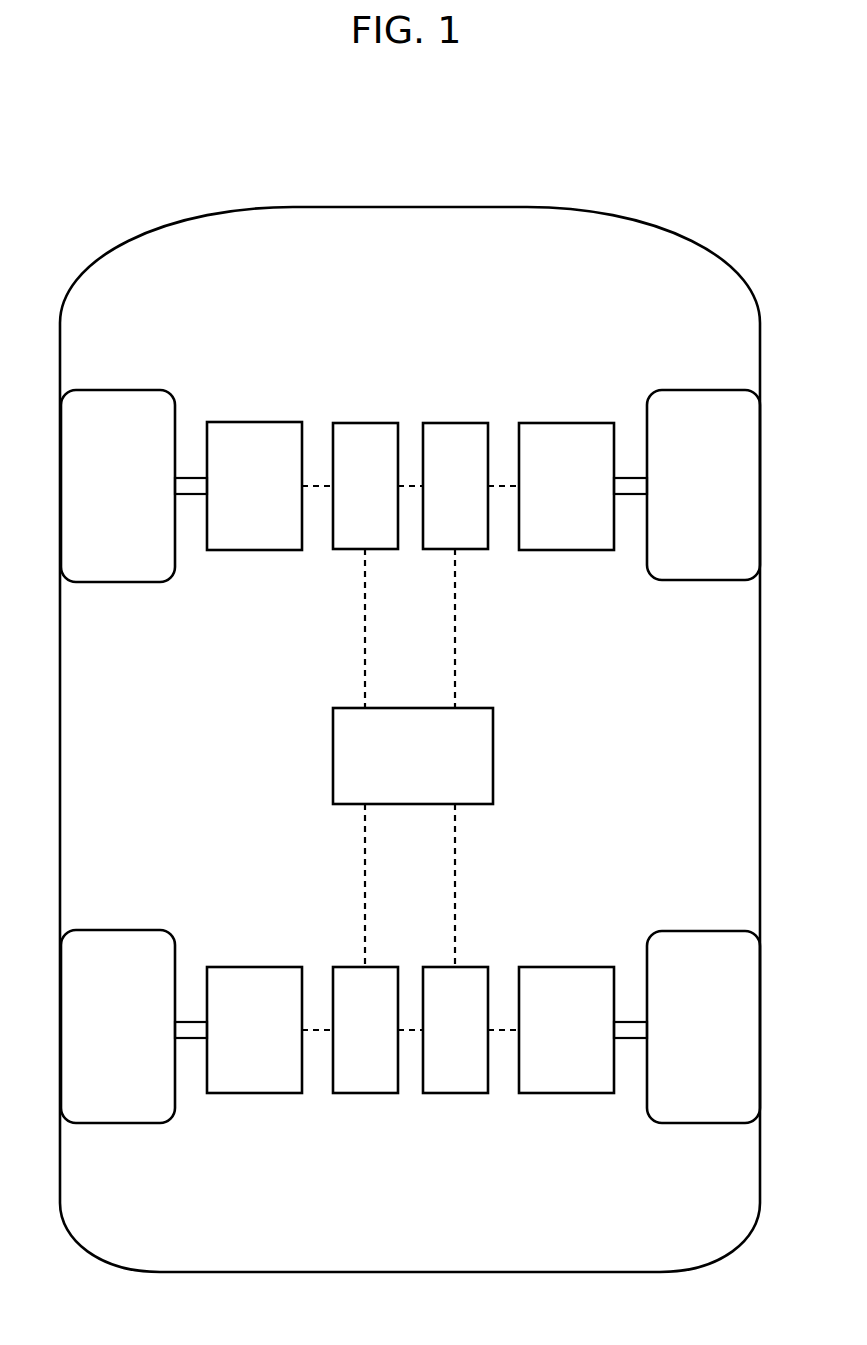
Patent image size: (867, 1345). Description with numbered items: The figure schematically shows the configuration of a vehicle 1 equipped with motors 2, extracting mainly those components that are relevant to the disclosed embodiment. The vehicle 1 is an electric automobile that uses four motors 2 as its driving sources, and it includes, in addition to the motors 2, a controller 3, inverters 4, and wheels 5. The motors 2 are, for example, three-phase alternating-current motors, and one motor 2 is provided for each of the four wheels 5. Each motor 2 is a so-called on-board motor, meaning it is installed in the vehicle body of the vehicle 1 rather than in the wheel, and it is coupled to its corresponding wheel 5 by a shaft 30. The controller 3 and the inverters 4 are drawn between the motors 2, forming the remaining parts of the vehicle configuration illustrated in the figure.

The vehicle 1 is at (424, 145).
The motor 2 is at (242, 504).
The controller 3 is at (403, 770).
The inverter 4 is at (353, 503).
The wheel 5 is at (106, 504).
The shaft 30 is at (192, 478).